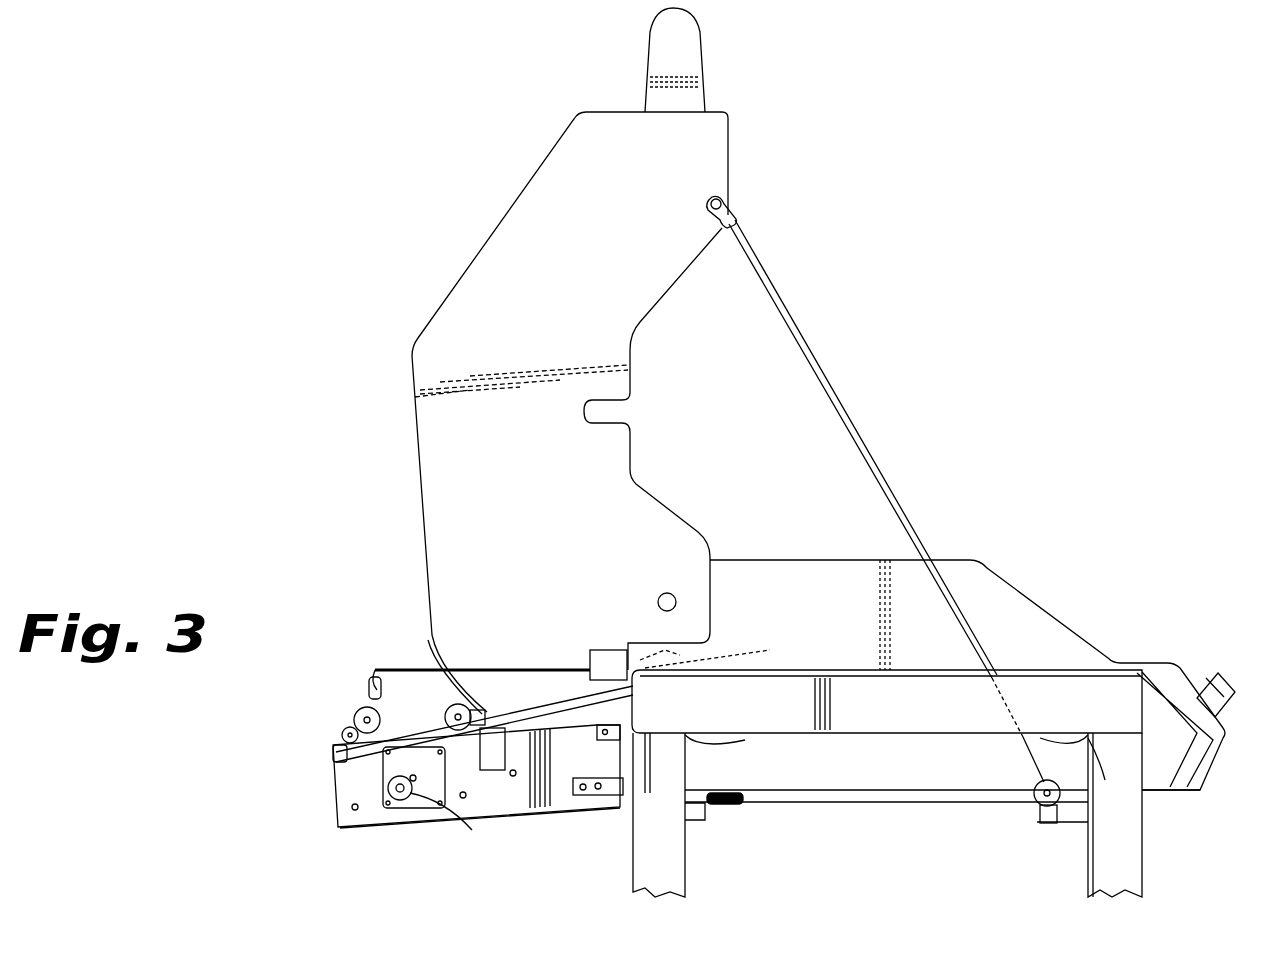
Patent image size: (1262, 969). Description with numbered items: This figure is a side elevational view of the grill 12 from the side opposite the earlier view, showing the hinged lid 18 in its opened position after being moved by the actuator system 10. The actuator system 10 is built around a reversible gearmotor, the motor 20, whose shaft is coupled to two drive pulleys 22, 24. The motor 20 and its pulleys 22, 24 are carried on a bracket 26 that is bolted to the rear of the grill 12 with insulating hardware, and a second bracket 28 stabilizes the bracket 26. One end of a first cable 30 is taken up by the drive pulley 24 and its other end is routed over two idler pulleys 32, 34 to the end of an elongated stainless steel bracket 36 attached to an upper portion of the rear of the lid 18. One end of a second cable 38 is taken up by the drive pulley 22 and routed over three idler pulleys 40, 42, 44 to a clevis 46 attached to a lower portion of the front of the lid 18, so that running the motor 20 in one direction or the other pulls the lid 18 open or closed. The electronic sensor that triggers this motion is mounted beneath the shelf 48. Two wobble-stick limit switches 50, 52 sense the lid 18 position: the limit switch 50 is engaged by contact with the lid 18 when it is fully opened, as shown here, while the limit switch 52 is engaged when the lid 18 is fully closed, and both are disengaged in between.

The actuator system 10 is at (496, 848).
The grill 12 is at (468, 243).
The lid 18 is at (407, 433).
The motor 20 is at (383, 773).
The drive pulley 22 is at (400, 832).
The drive pulley 24 is at (417, 827).
The bracket 26 is at (560, 797).
The second bracket 28 is at (550, 700).
The first cable 30 is at (366, 712).
The idler pulley 32 is at (453, 707).
The idler pulley 34 is at (358, 712).
The elongated stainless steel bracket 36 is at (374, 680).
The second cable 38 is at (877, 800).
The idler pulley 40 is at (623, 797).
The idler pulley 42 is at (744, 800).
The idler pulley 44 is at (1040, 800).
The clevis 46 is at (726, 210).
The shelf 48 is at (1122, 700).
The limit switch 50 is at (505, 712).
The limit switch 52 is at (692, 659).